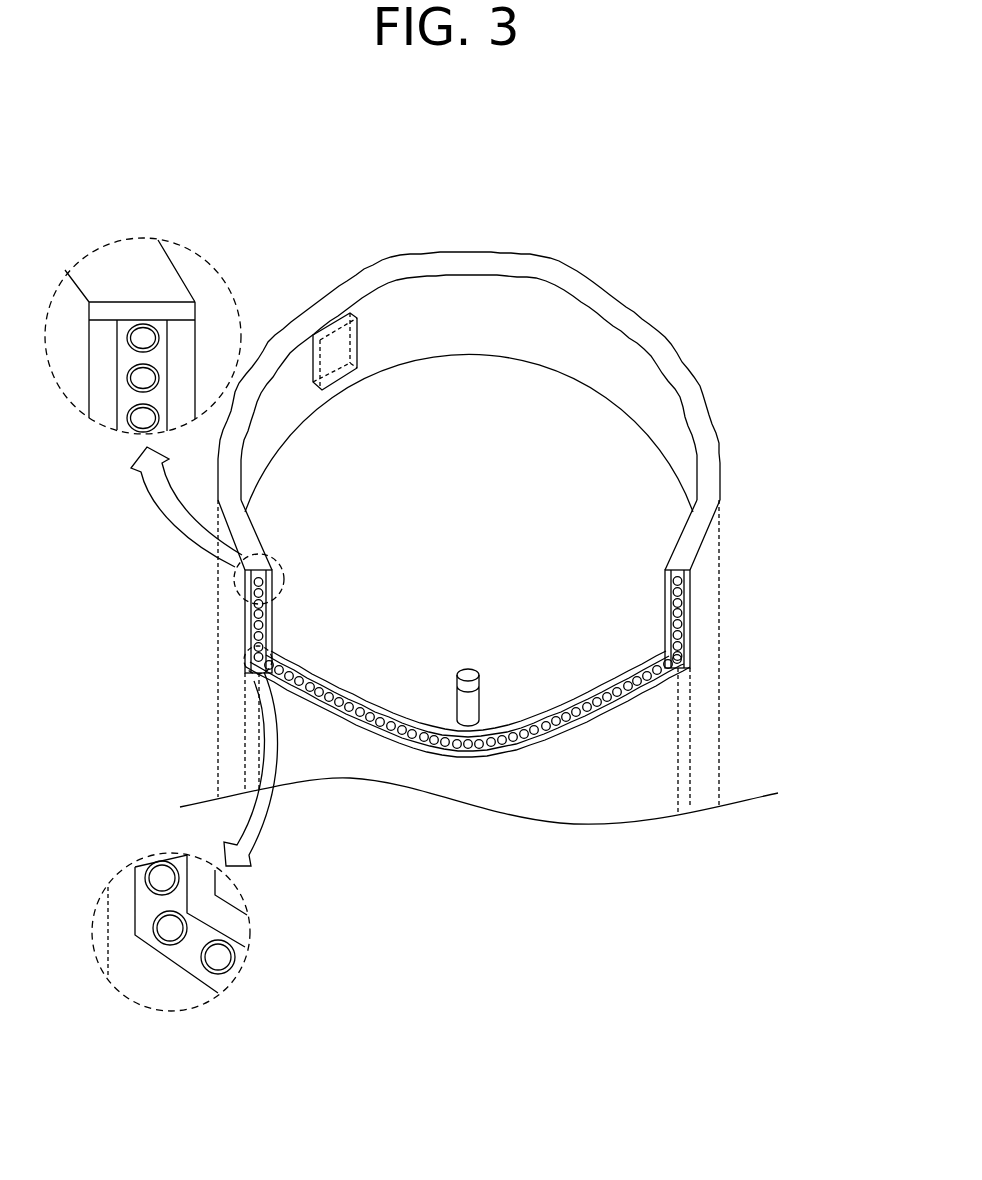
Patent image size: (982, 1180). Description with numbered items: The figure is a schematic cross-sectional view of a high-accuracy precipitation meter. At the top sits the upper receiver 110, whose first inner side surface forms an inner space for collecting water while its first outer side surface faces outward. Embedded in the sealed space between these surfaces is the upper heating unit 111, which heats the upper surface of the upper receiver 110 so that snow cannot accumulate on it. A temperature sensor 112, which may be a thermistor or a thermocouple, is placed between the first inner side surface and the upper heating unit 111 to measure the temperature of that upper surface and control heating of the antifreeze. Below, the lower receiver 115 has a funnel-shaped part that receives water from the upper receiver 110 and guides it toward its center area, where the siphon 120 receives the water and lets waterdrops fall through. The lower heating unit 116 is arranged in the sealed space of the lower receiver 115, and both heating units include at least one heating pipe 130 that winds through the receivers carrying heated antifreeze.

The upper receiver 110 is at (633, 393).
The upper heating unit 111 is at (690, 587).
The temperature sensor 112 is at (340, 347).
The lower receiver 115 is at (613, 638).
The lower heating unit 116 is at (592, 722).
The siphon 120 is at (479, 697).
The heating pipe 130 is at (217, 957).